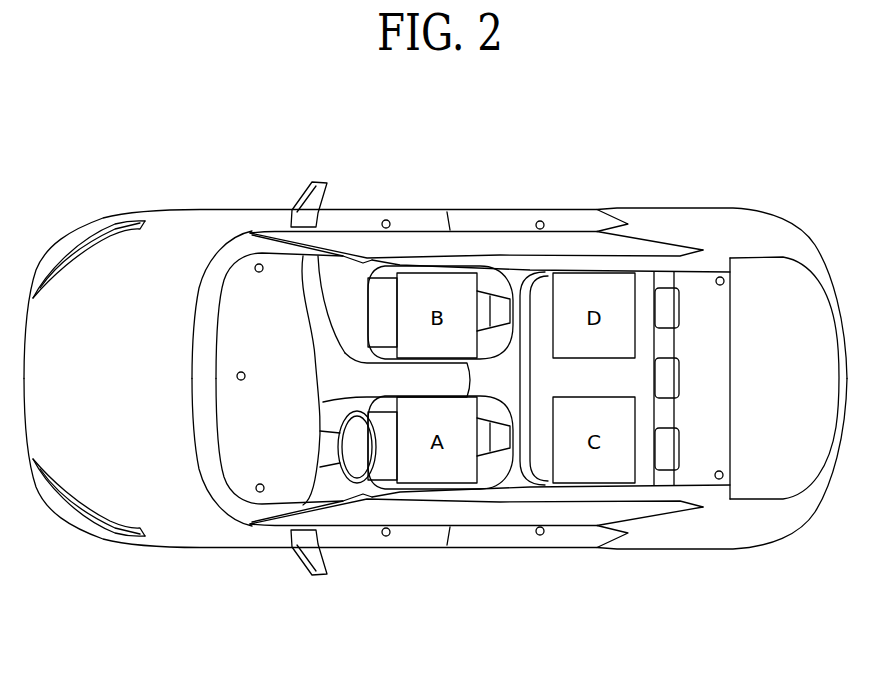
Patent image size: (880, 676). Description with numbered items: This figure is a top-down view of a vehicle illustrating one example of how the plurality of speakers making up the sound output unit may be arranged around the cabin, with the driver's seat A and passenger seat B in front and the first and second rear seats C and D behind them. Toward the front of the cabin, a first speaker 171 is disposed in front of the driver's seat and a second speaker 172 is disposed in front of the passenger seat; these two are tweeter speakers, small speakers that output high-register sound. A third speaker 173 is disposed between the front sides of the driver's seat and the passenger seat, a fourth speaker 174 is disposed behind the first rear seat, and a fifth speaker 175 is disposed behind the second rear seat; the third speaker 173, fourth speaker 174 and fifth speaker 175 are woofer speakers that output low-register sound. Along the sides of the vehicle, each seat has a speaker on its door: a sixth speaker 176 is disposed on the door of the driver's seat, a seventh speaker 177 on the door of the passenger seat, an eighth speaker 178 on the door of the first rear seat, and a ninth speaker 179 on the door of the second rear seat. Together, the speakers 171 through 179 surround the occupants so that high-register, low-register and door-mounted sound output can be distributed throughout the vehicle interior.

The first speaker 171 is at (259, 492).
The second speaker 172 is at (259, 264).
The third speaker 173 is at (237, 376).
The fourth speaker 174 is at (719, 479).
The fifth speaker 175 is at (720, 277).
The sixth speaker 176 is at (386, 536).
The seventh speaker 177 is at (386, 220).
The eighth speaker 178 is at (540, 535).
The ninth speaker 179 is at (540, 221).